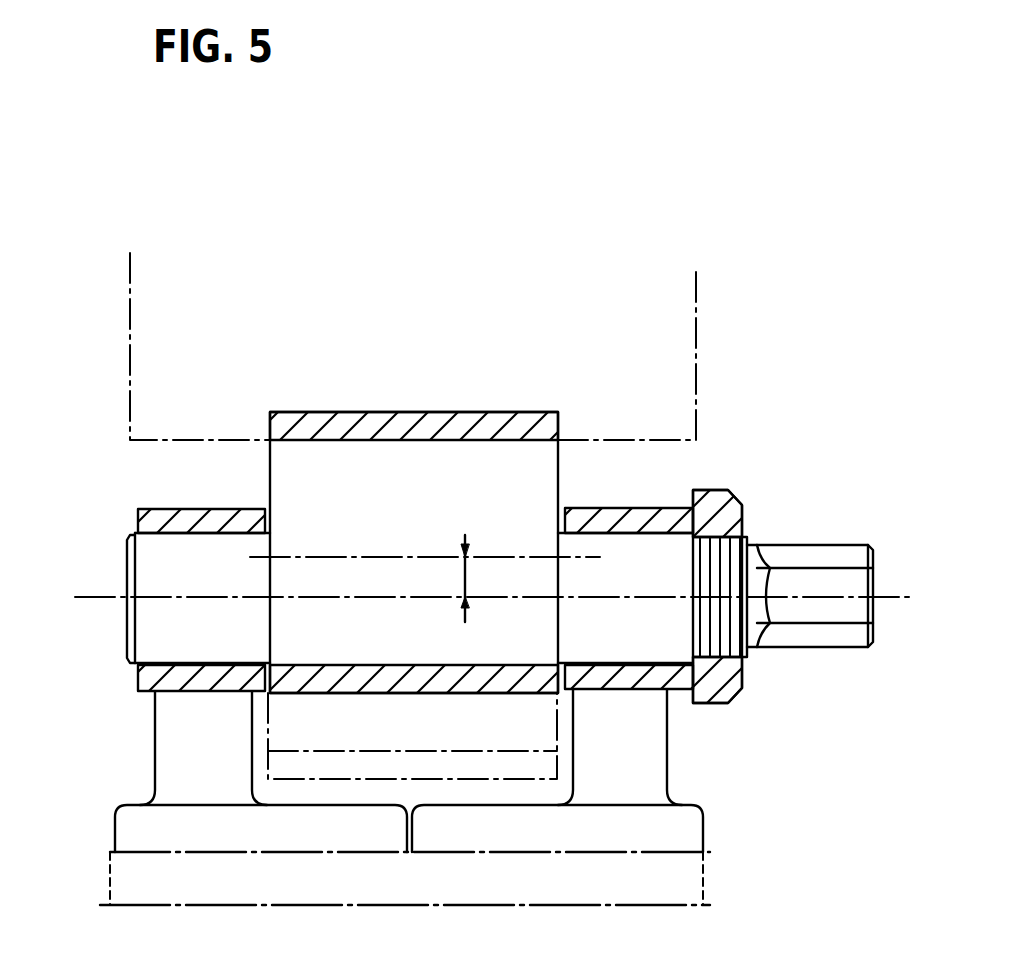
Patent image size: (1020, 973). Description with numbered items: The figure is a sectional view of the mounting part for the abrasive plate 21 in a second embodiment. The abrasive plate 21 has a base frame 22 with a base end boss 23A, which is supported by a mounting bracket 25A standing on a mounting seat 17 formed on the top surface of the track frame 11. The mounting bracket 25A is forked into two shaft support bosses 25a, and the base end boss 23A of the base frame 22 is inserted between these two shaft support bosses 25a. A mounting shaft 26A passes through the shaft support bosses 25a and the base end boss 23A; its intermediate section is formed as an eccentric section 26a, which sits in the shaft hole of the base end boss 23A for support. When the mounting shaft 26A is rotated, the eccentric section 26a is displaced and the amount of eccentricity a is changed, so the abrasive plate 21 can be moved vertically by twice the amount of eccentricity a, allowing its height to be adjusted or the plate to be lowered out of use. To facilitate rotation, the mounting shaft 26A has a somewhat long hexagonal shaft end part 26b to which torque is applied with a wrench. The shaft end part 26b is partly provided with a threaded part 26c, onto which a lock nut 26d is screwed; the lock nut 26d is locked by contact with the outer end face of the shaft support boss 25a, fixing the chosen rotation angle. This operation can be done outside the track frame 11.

The track frame 11 is at (688, 947).
The mounting seat 17 is at (678, 880).
The abrasive plate 21 is at (680, 277).
The base frame 22 is at (677, 323).
The base end boss 23A is at (497, 410).
The mounting bracket 25A is at (645, 500).
The shaft support boss 25a is at (153, 693).
The mounting shaft 26A is at (155, 562).
The eccentric section 26a is at (297, 483).
The hexagonal shaft end part 26b is at (779, 543).
The threaded part 26c is at (750, 535).
The lock nut 26d is at (718, 680).
The amount of eccentricity a is at (465, 575).